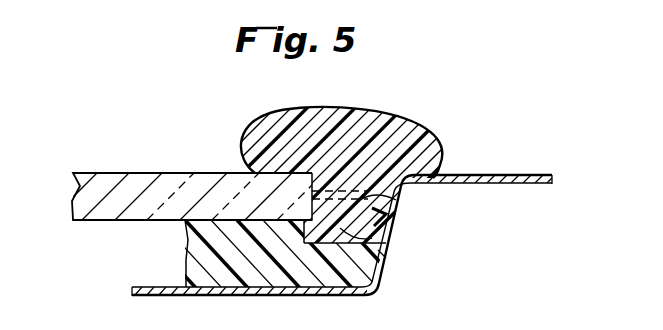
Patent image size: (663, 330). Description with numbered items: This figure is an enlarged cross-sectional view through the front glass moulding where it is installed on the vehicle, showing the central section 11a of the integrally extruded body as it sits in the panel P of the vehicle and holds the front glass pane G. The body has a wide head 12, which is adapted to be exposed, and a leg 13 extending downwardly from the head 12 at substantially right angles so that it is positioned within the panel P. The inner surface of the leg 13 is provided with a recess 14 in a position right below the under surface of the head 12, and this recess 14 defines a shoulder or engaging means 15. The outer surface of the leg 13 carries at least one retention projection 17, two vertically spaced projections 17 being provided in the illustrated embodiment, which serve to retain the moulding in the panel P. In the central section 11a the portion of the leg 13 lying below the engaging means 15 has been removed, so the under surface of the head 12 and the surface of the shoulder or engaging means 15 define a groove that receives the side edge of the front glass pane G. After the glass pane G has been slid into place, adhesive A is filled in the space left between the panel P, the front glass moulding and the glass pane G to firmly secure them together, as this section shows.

The head 12 is at (254, 124).
The recess 14 is at (354, 130).
The central section 11a is at (433, 133).
The panel P is at (510, 175).
The front glass pane G is at (167, 197).
The retention projection 17 is at (392, 210).
The leg 13 is at (355, 228).
The shoulder or engaging means 15 is at (386, 253).
The adhesive A is at (222, 253).